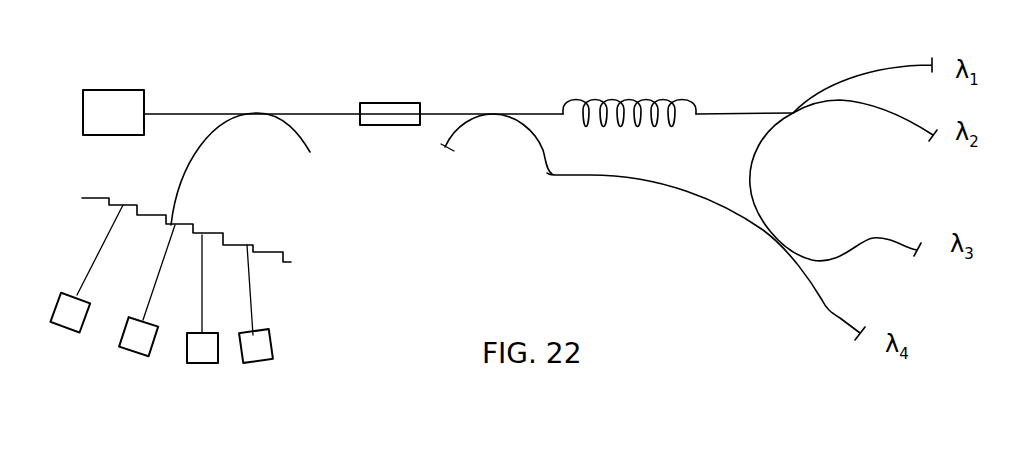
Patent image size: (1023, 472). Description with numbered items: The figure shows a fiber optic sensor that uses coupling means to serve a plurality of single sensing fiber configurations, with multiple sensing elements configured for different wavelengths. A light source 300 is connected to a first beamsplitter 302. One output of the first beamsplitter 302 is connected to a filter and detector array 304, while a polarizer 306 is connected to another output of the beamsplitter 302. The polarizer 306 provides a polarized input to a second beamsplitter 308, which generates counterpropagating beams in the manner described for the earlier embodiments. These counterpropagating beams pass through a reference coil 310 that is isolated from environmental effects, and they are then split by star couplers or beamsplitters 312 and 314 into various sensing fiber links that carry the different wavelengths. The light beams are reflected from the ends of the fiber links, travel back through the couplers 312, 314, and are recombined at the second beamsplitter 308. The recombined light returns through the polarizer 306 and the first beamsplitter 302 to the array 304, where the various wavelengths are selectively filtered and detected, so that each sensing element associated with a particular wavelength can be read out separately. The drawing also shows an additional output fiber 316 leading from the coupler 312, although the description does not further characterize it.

The light source 300 is at (115, 90).
The first beamsplitter 302 is at (257, 112).
The filter and detector array 304 is at (167, 304).
The polarizer 306 is at (406, 74).
The second beamsplitter 308 is at (493, 116).
The reference coil 310 is at (633, 100).
The star coupler or beamsplitter 312 is at (792, 114).
The star coupler or beamsplitter 314 is at (830, 258).
The output fiber for wavelength 1 316 is at (935, 72).